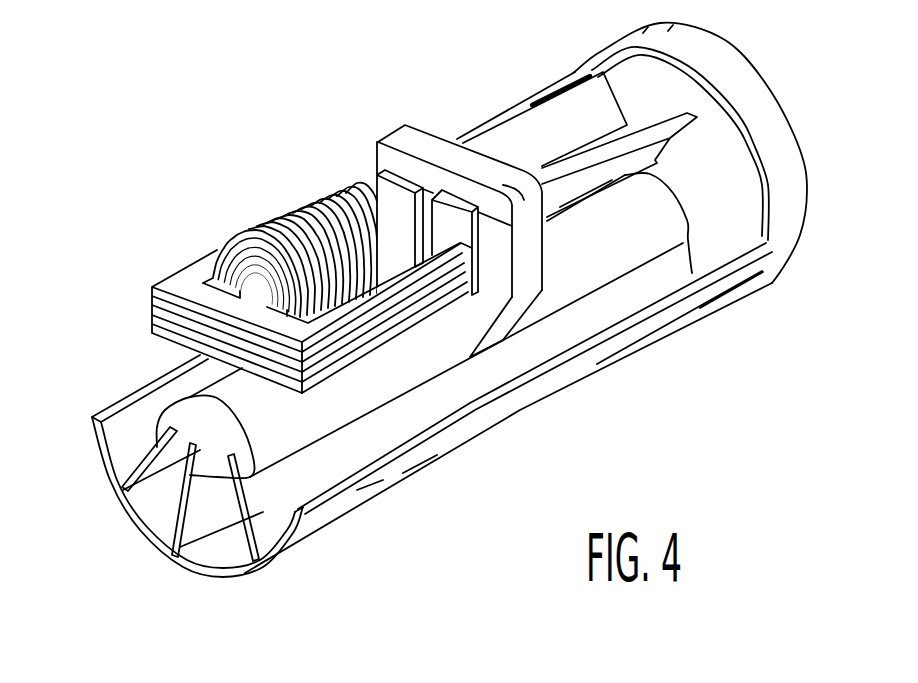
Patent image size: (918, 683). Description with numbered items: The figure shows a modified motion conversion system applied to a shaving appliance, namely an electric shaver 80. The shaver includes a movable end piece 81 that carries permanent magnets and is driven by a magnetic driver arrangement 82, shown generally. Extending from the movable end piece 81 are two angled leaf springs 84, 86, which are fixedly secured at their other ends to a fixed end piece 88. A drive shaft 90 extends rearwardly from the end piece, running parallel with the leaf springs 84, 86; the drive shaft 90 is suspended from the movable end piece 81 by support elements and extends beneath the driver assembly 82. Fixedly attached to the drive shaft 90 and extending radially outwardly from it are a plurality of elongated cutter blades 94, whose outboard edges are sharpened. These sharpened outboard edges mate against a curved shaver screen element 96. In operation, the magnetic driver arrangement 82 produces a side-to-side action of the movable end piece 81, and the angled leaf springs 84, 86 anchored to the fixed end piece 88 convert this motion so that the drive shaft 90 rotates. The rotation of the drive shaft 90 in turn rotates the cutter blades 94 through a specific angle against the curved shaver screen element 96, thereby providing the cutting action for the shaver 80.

The electric shaver 80 is at (312, 131).
The movable end piece 81 is at (419, 138).
The magnetic driver arrangement 82 is at (271, 196).
The angled leaf spring 84 is at (553, 127).
The angled leaf spring 86 is at (678, 140).
The fixed end piece 88 is at (672, 92).
The drive shaft 90 is at (640, 240).
The elongated cutter blades 94 is at (160, 467).
The curved shaver screen element 96 is at (232, 573).